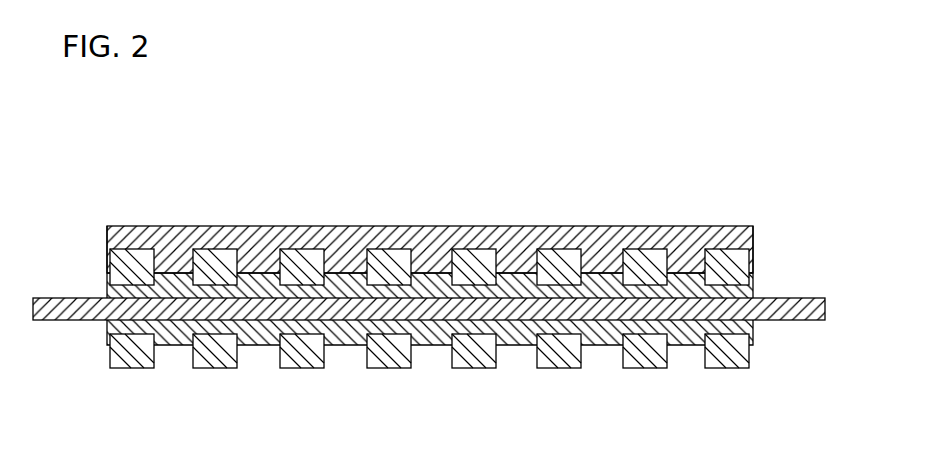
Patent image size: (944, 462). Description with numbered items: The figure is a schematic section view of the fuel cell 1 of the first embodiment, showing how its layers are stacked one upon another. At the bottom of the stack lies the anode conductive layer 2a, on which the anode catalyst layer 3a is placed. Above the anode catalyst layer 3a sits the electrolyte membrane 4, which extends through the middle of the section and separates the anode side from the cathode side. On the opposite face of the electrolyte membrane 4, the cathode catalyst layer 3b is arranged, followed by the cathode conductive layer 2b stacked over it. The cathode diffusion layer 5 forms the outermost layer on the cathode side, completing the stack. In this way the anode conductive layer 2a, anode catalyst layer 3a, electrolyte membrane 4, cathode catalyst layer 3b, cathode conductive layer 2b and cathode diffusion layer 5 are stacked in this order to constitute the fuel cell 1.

The fuel cell 1 is at (628, 173).
The anode conductive layer 2a is at (554, 350).
The cathode conductive layer 2b is at (566, 236).
The anode catalyst layer 3a is at (437, 345).
The cathode catalyst layer 3b is at (435, 273).
The electrolyte membrane 4 is at (73, 297).
The cathode diffusion layer 5 is at (345, 250).